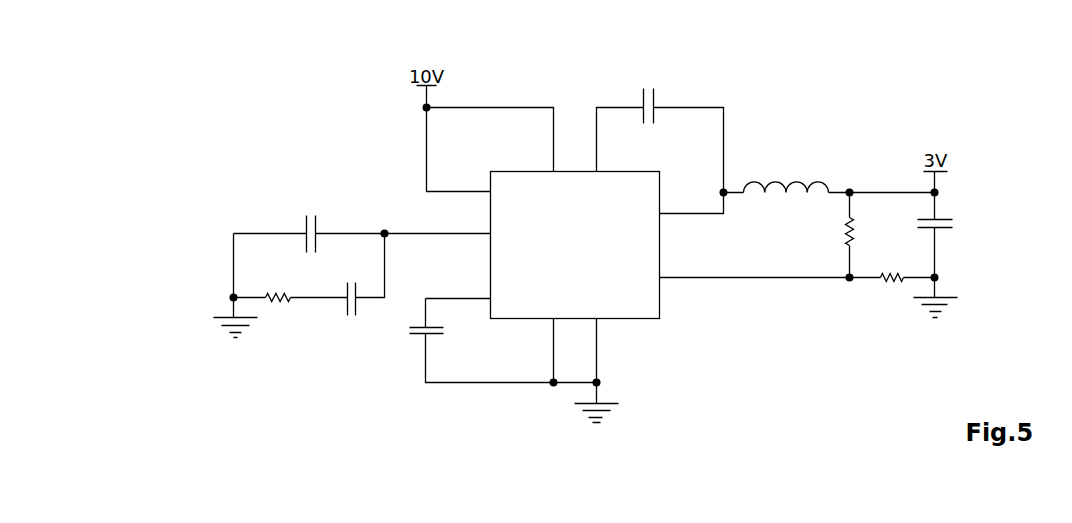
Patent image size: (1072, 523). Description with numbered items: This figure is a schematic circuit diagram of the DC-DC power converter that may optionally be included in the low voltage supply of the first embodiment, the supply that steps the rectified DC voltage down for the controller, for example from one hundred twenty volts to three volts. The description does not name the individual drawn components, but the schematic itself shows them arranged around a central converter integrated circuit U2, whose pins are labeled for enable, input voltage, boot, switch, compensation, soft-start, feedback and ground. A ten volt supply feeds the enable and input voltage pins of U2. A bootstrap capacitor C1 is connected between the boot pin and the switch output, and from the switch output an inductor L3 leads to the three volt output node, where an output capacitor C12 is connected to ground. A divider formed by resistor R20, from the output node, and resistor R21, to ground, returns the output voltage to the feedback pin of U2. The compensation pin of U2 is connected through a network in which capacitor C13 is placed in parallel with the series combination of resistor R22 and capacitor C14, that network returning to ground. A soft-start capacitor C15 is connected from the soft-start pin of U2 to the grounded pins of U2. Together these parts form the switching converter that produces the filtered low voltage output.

The switching regulator IC U2 is at (576, 247).
The bootstrap capacitor C1 is at (645, 95).
The inductor L3 is at (786, 172).
The output capacitor C12 is at (940, 204).
The feedback resistor R20 is at (869, 228).
The feedback resistor R21 is at (887, 266).
The compensation resistor R22 is at (273, 286).
The compensation capacitor C13 is at (312, 224).
The compensation capacitor C14 is at (355, 286).
The soft-start capacitor C15 is at (424, 308).